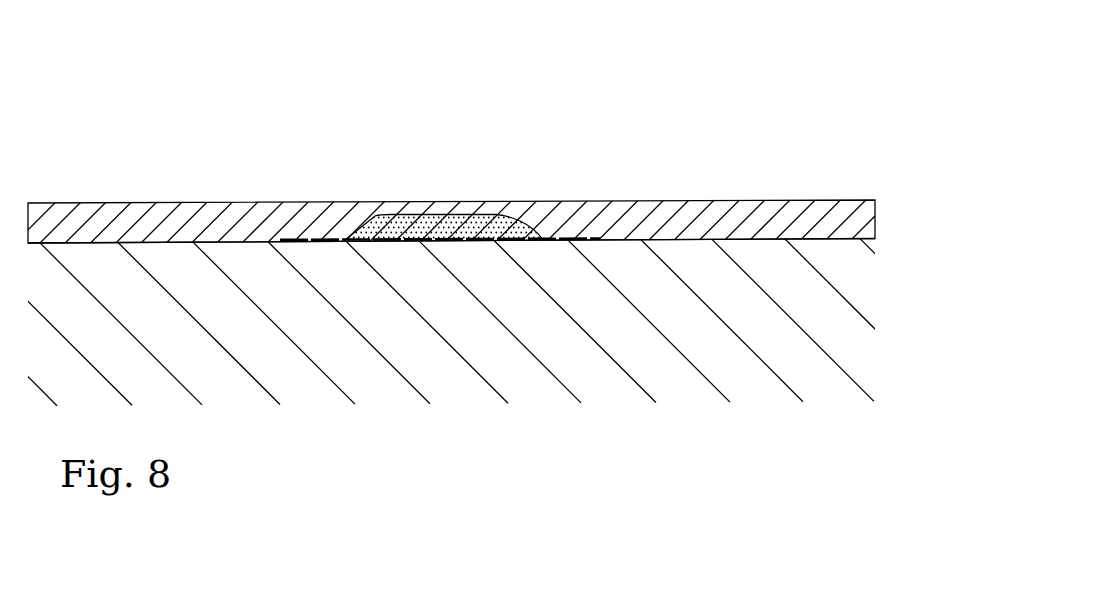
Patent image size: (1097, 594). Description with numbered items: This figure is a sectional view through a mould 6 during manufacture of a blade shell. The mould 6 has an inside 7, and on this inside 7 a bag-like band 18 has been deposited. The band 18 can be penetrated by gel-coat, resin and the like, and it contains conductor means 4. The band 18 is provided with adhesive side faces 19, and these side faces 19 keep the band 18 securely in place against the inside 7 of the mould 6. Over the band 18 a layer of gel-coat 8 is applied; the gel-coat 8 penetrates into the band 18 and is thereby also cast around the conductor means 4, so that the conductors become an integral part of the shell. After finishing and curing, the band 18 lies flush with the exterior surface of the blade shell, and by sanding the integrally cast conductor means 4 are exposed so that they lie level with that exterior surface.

The conductor means 4 is at (430, 223).
The mould 6 is at (418, 332).
The inside of the mould 7 is at (150, 243).
The gel-coat 8 is at (683, 205).
The bag-like band 18 is at (475, 214).
The adhesive side faces 19 is at (575, 236).